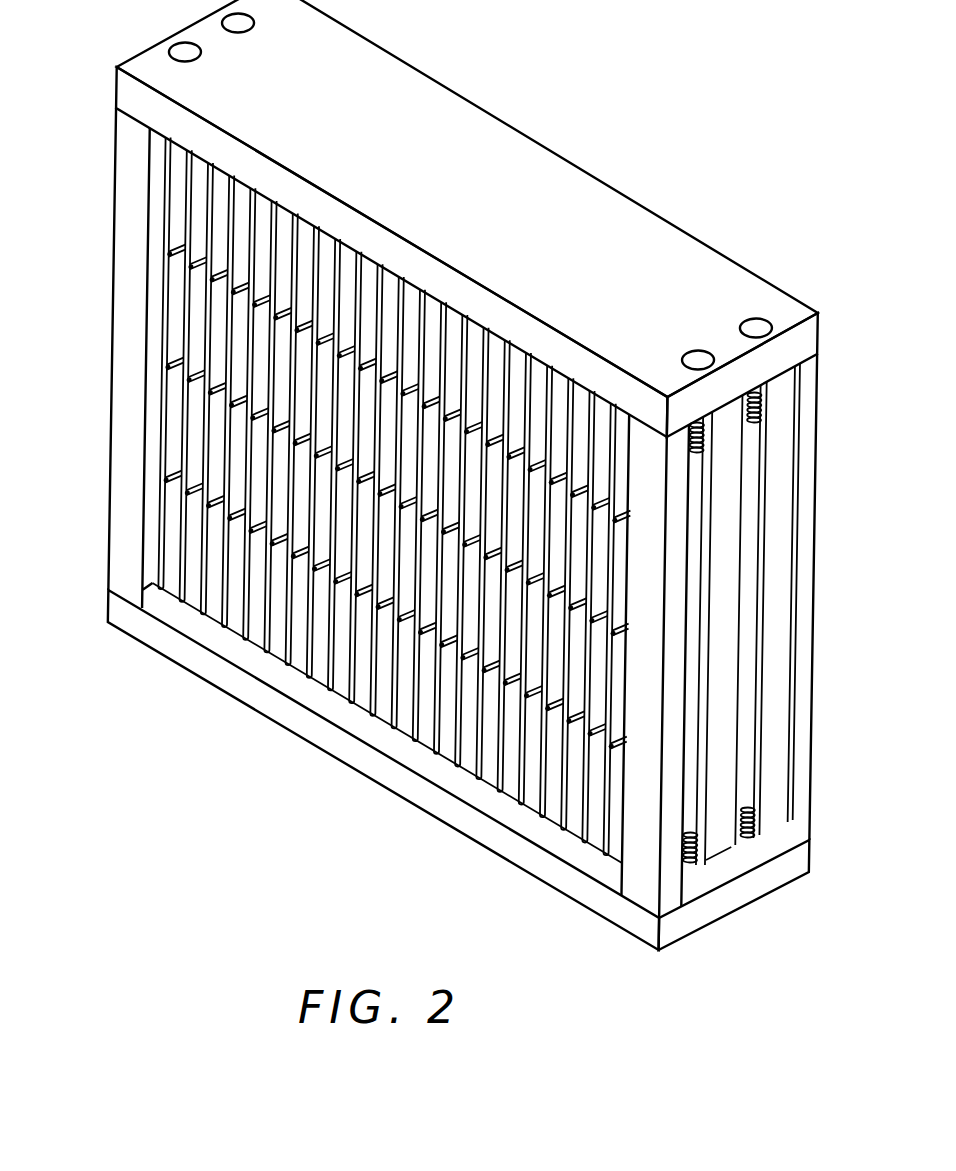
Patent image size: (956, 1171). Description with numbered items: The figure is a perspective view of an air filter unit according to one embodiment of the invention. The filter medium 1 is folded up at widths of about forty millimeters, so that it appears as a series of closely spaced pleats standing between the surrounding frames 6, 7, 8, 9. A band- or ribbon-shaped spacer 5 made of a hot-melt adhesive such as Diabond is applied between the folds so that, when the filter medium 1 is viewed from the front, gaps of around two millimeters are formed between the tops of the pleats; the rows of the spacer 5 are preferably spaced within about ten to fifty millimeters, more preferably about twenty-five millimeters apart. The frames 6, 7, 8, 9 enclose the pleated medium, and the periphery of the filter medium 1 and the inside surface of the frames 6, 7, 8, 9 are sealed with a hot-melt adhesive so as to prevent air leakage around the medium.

The filter medium 1 is at (192, 231).
The spacer 5 is at (180, 362).
The frame 6 is at (603, 183).
The frame 7 is at (728, 623).
The frame 8 is at (333, 742).
The frame 9 is at (123, 443).